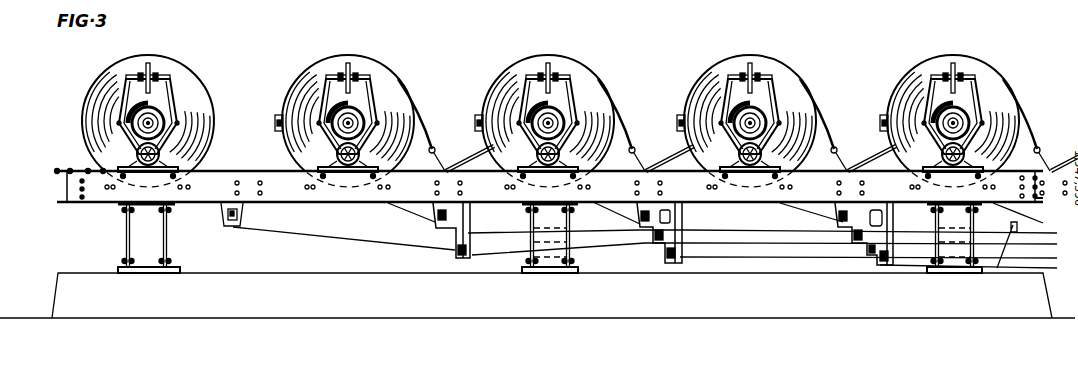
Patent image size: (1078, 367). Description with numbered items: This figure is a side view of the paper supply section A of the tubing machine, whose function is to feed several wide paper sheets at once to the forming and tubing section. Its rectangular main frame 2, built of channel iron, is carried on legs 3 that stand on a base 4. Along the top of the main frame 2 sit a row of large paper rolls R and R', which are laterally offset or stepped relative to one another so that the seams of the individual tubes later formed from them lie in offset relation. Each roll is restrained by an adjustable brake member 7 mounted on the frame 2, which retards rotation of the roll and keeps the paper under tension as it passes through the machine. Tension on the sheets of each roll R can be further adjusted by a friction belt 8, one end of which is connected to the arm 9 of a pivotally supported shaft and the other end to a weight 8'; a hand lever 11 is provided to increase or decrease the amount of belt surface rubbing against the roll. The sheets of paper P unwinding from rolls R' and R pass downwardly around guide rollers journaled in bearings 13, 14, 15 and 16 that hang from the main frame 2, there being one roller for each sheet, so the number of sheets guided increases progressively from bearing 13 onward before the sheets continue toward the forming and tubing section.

The main frame 2 is at (561, 186).
The legs 3 is at (166, 238).
The base 4 is at (57, 297).
The paper supply section A is at (537, 302).
The adjustable brake member 7 is at (165, 116).
The friction belt 8 is at (659, 112).
The weight 8' is at (568, 115).
The arm 9 is at (436, 150).
The hand lever 11 is at (469, 159).
The bearing 13 is at (234, 228).
The bearing 14 is at (473, 220).
The bearing 15 is at (680, 232).
The bearing 16 is at (842, 225).
The paper sheets P is at (219, 171).
The paper roll R is at (284, 159).
The paper roll R' is at (131, 121).